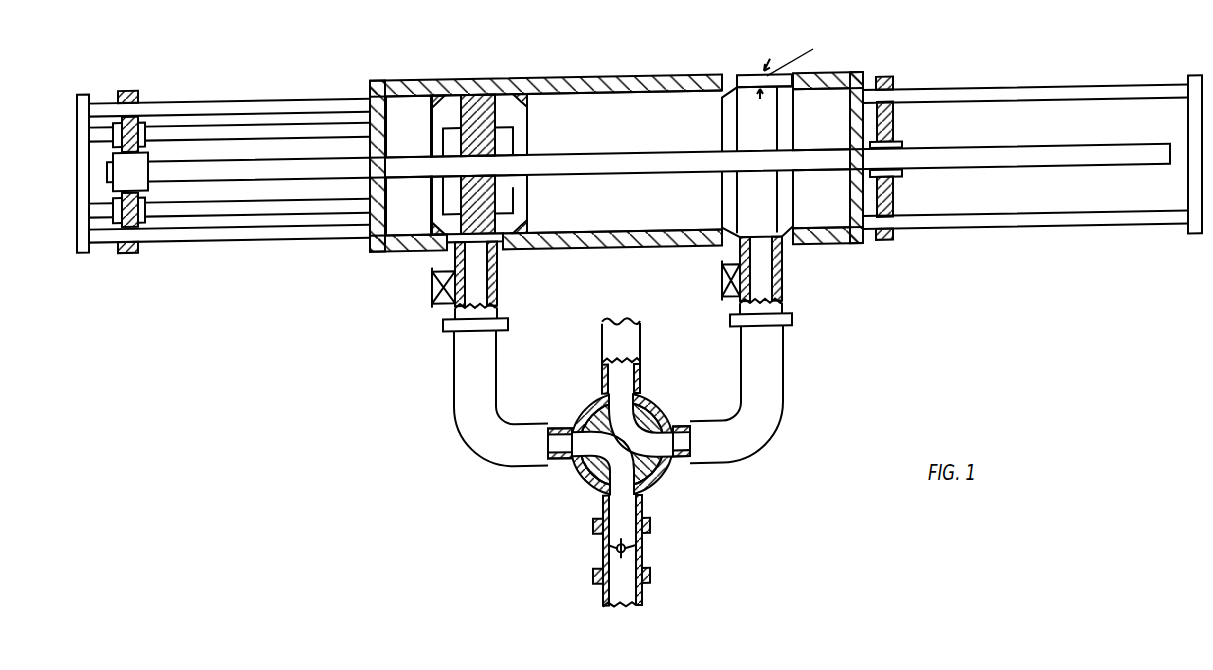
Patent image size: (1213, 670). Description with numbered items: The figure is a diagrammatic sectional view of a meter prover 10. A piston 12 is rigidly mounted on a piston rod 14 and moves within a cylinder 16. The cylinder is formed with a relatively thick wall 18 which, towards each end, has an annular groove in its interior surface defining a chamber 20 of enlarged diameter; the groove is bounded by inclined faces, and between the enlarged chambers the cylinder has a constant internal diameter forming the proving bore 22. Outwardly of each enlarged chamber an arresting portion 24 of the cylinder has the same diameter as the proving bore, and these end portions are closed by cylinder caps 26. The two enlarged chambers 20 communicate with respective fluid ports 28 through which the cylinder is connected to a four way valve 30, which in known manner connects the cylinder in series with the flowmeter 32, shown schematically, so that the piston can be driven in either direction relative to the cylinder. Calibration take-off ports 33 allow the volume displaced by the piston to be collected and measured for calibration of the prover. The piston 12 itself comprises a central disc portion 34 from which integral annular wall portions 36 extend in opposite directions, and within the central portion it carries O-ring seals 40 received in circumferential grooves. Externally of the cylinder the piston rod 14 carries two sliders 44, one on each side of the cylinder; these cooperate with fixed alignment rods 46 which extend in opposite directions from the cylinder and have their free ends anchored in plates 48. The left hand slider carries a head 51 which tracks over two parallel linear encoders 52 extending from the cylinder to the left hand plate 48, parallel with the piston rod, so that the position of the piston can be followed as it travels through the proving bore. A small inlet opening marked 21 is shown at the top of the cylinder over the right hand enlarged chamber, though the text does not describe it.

The meter prover 10 is at (618, 309).
The piston 12 is at (528, 123).
The piston rod 14 is at (640, 152).
The cylinder 16 is at (693, 75).
The wall 18 is at (573, 243).
The chamber 20 is at (746, 139).
The inlet port 21 is at (732, 75).
The proving bore 22 is at (609, 132).
The arresting portion 24 is at (396, 133).
The cylinder cap 26 is at (370, 242).
The fluid port 28 is at (498, 272).
The four way valve 30 is at (665, 482).
The flowmeter 32 is at (640, 547).
The calibration take-off port 33 is at (423, 283).
The central disc portion 34 is at (495, 181).
The annular wall portion 36 is at (528, 211).
The O-ring seal 40 is at (486, 92).
The slider 44 is at (134, 82).
The alignment rod 46 is at (213, 95).
The plate 48 is at (77, 171).
The head 51 is at (113, 125).
The linear encoder 52 is at (287, 122).